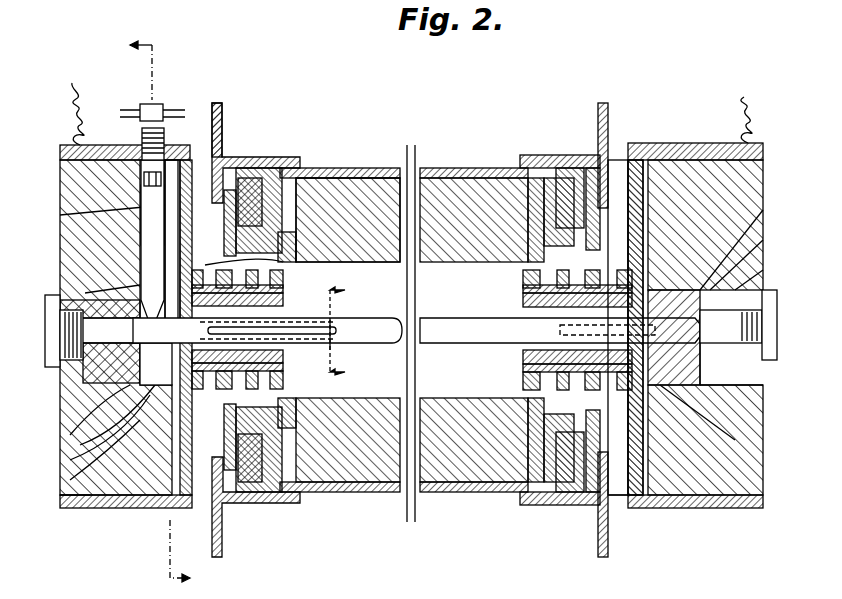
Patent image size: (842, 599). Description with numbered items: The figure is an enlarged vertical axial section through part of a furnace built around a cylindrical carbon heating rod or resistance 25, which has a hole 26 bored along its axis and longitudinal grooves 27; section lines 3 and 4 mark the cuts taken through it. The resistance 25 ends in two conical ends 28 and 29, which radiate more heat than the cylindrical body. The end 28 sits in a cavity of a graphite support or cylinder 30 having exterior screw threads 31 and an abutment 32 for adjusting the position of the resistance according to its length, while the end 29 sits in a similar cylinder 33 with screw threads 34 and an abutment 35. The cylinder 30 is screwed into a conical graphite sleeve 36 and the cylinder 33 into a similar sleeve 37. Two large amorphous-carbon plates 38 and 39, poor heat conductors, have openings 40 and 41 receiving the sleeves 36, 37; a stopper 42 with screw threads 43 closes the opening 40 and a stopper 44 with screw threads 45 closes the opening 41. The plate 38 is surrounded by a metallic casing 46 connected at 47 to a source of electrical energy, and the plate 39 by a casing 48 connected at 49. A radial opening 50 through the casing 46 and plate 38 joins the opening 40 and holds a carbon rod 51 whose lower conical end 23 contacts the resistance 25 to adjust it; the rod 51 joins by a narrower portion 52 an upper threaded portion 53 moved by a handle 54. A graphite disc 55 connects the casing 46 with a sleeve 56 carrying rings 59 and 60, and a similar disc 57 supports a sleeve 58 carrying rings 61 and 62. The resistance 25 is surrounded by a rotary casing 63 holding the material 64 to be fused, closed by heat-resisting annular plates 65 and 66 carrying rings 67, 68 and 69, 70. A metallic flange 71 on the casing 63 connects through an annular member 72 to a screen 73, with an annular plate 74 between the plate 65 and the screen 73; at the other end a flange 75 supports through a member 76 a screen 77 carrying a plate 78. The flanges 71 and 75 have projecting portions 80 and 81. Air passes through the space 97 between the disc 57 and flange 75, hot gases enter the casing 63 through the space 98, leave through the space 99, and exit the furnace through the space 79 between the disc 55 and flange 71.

The section line 3- 3 is at (160, 309).
The section line 4- 4 is at (347, 328).
The lower conical end 23 is at (152, 300).
The heating rod or resistance 25 is at (370, 318).
The hole 26 is at (560, 330).
The longitudinal grooves 27 is at (343, 343).
The conical end 28 is at (156, 364).
The conical end 29 is at (763, 240).
The support or cylinder 30 is at (70, 435).
The exterior screw threads 31 is at (80, 445).
The abutment 32 is at (70, 360).
The cylinder 33 is at (700, 380).
The exterior screw threads 34 is at (763, 212).
The abutment 35 is at (700, 370).
The conical sleeve 36 is at (70, 480).
The sleeve 37 is at (700, 410).
The plate 38 is at (70, 460).
The plate 39 is at (745, 440).
The opening 40 is at (60, 497).
The opening 41 is at (763, 270).
The stopper 42 is at (52, 296).
The screw threads 43 is at (85, 293).
The stopper 44 is at (770, 292).
The screw threads 45 is at (760, 325).
The metallic casing 46 is at (92, 508).
The connection 47 is at (78, 90).
The metallic casing 48 is at (732, 508).
The connection 49 is at (752, 110).
The radial opening 50 is at (172, 180).
The carbon rod 51 is at (141, 200).
The narrower portion 52 is at (144, 178).
The upper portion 53 is at (142, 135).
The handle 54 is at (135, 108).
The disc 55 is at (60, 215).
The sleeve 56 is at (283, 300).
The graphite disc 57 is at (630, 160).
The sleeve 58 is at (523, 360).
The ring 59 is at (270, 268).
The ring 60 is at (205, 318).
The ring 61 is at (523, 278).
The ring 62 is at (523, 300).
The rotary casing 63 is at (365, 168).
The material 64 is at (378, 185).
The annular plate 65 is at (285, 232).
The plate 66 is at (565, 170).
The ring 67 is at (283, 262).
The ring 68 is at (340, 168).
The ring 69 is at (532, 185).
The ring 70 is at (550, 185).
The metallic annular flange 71 is at (222, 160).
The annular member 72 is at (230, 192).
The screen or ring 73 is at (260, 168).
The annular plate 74 is at (262, 200).
The annular flange 75 is at (612, 160).
The member 76 is at (590, 168).
The screen 77 is at (582, 505).
The plate 78 is at (572, 505).
The space 79 is at (200, 470).
The annular projecting portion 80 is at (220, 104).
The annular projecting portion 81 is at (600, 104).
The space 97 is at (622, 490).
The space 98 is at (560, 390).
The space 99 is at (252, 395).